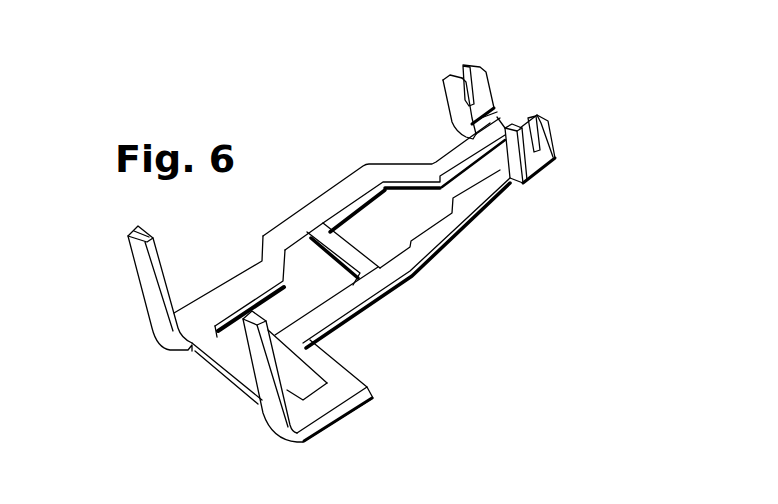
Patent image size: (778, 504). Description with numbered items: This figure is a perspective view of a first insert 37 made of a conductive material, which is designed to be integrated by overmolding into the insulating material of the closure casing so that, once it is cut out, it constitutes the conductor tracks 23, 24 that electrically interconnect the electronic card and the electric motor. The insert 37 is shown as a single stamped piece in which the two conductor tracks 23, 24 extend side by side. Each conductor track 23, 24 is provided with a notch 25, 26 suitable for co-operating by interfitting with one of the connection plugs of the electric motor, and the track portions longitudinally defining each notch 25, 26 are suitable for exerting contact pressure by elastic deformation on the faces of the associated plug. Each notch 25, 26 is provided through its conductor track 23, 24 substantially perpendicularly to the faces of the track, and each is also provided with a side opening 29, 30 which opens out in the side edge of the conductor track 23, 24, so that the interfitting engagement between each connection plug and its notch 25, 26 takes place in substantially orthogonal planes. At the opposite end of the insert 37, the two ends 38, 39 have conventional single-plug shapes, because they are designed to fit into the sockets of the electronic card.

The conductor track 23 is at (407, 258).
The conductor track 24 is at (344, 190).
The notch 25 is at (537, 147).
The notch 26 is at (466, 105).
The side opening 29 is at (521, 116).
The side opening 30 is at (460, 68).
The first insert 37 is at (558, 193).
The end 38 is at (258, 346).
The end 39 is at (144, 263).